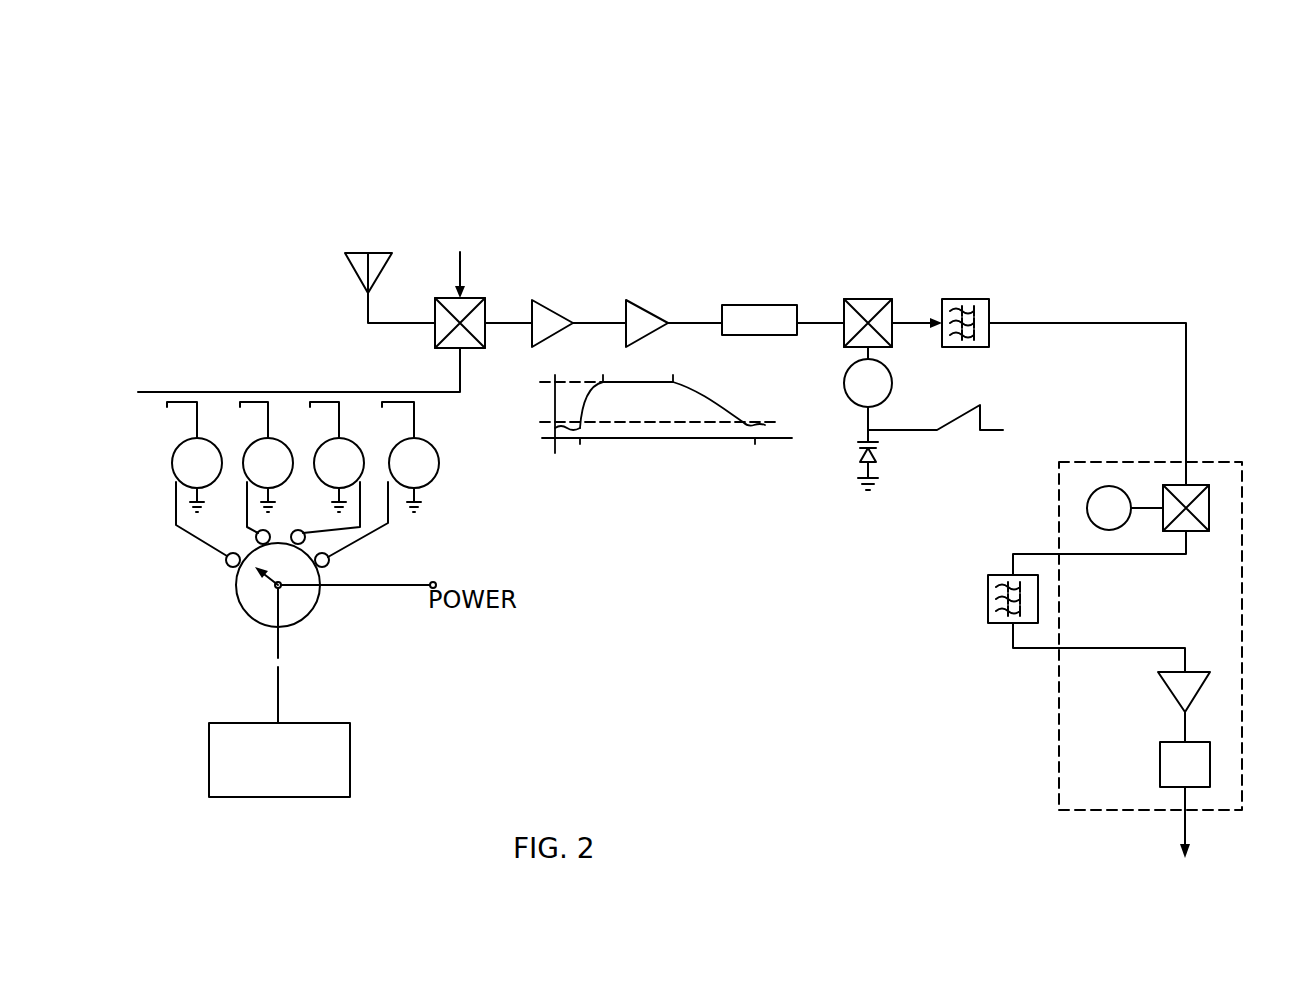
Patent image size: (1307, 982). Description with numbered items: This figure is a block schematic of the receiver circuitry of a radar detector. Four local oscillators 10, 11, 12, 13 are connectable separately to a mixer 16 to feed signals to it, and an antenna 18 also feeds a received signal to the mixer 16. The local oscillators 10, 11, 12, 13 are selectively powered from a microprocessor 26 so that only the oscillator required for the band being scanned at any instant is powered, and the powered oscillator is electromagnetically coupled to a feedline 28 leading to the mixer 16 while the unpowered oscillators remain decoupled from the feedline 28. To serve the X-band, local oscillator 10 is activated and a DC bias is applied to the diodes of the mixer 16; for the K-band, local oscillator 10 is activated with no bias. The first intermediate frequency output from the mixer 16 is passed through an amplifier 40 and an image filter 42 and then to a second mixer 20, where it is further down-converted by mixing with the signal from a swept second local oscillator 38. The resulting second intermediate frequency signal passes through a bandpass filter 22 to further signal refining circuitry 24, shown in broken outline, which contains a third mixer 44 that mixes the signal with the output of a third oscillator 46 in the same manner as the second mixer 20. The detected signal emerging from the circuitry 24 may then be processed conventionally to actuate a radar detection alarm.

The local oscillator 10 is at (182, 458).
The local oscillator 11 is at (255, 458).
The local oscillator 12 is at (328, 458).
The local oscillator 13 is at (402, 458).
The mixer 16 is at (468, 338).
The antenna 18 is at (360, 262).
The second mixer 20 is at (872, 307).
The bandpass filter 22 is at (973, 307).
The signal refining circuitry 24 is at (1255, 582).
The microprocessor 26 is at (312, 772).
The feedline 28 is at (388, 390).
The second local oscillator 38 is at (846, 392).
The amplifier 40 is at (640, 310).
The image filter 42 is at (755, 310).
The third mixer 44 is at (1196, 505).
The third oscillator 46 is at (1104, 497).